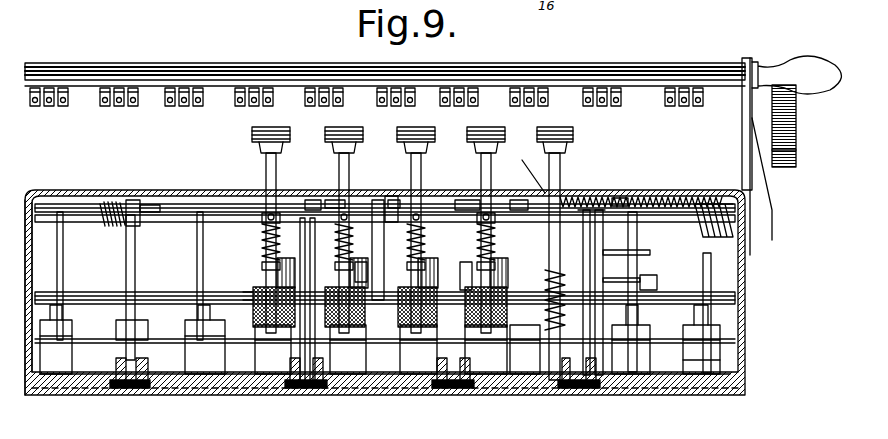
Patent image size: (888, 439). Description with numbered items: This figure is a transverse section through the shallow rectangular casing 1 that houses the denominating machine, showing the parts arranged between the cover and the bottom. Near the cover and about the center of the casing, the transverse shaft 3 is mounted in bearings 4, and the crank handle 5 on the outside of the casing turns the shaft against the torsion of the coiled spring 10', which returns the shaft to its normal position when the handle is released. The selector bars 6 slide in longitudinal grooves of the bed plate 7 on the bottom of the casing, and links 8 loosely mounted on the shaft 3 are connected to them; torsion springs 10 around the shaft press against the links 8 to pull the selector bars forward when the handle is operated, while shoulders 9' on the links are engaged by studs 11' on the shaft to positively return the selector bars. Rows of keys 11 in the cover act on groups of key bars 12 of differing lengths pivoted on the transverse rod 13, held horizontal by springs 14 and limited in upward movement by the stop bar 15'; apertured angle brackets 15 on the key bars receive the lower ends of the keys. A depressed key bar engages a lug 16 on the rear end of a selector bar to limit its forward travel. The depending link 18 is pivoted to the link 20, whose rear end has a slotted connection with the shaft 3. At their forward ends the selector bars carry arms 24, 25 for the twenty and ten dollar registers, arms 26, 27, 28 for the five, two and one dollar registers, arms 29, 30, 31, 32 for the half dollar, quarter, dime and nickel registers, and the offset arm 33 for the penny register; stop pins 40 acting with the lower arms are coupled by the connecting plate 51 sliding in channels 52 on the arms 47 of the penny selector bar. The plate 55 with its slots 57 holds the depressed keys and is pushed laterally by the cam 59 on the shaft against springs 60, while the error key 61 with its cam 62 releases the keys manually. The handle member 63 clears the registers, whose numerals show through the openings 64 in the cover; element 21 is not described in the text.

The casing 1 is at (660, 193).
The transverse shaft 3 is at (186, 205).
The bearings 4 is at (38, 194).
The crank handle 5 is at (811, 64).
The selector bars 6 is at (136, 388).
The bed plate 7 is at (256, 378).
The links 8 is at (136, 284).
The shoulders 9' is at (393, 178).
The torsion springs 10 is at (351, 249).
The coiled spring 10' is at (714, 196).
The keys 11 is at (372, 221).
The studs 11' is at (136, 193).
The key bars 12 is at (258, 288).
The transverse rod 13 is at (740, 305).
The springs 14 is at (166, 321).
The apertured angle brackets 15 is at (384, 268).
The stop bar 15' is at (368, 229).
The lug 16 is at (385, 43).
The depending link 18 is at (370, 258).
The link 20 is at (382, 272).
The pawl 21 is at (398, 208).
The arm 24 is at (70, 358).
The arm 25 is at (146, 326).
The arm 26 is at (222, 362).
The arm 27 is at (273, 349).
The arm 28 is at (348, 349).
The arm 29 is at (418, 349).
The arm 30 is at (486, 349).
The arm 31 is at (543, 360).
The arm 32 is at (631, 339).
The offset arm 33 is at (708, 372).
The stop pins 40 is at (62, 266).
The arms 47 is at (650, 253).
The connecting plate 51 is at (640, 278).
The channels 52 is at (670, 284).
The plate 55 is at (335, 197).
The slots 57 is at (362, 185).
The cam 59 is at (528, 196).
The springs 60 is at (630, 195).
The error key 61 is at (561, 174).
The cam 62 is at (540, 166).
The handle member 63 is at (797, 141).
The openings 64 is at (38, 106).